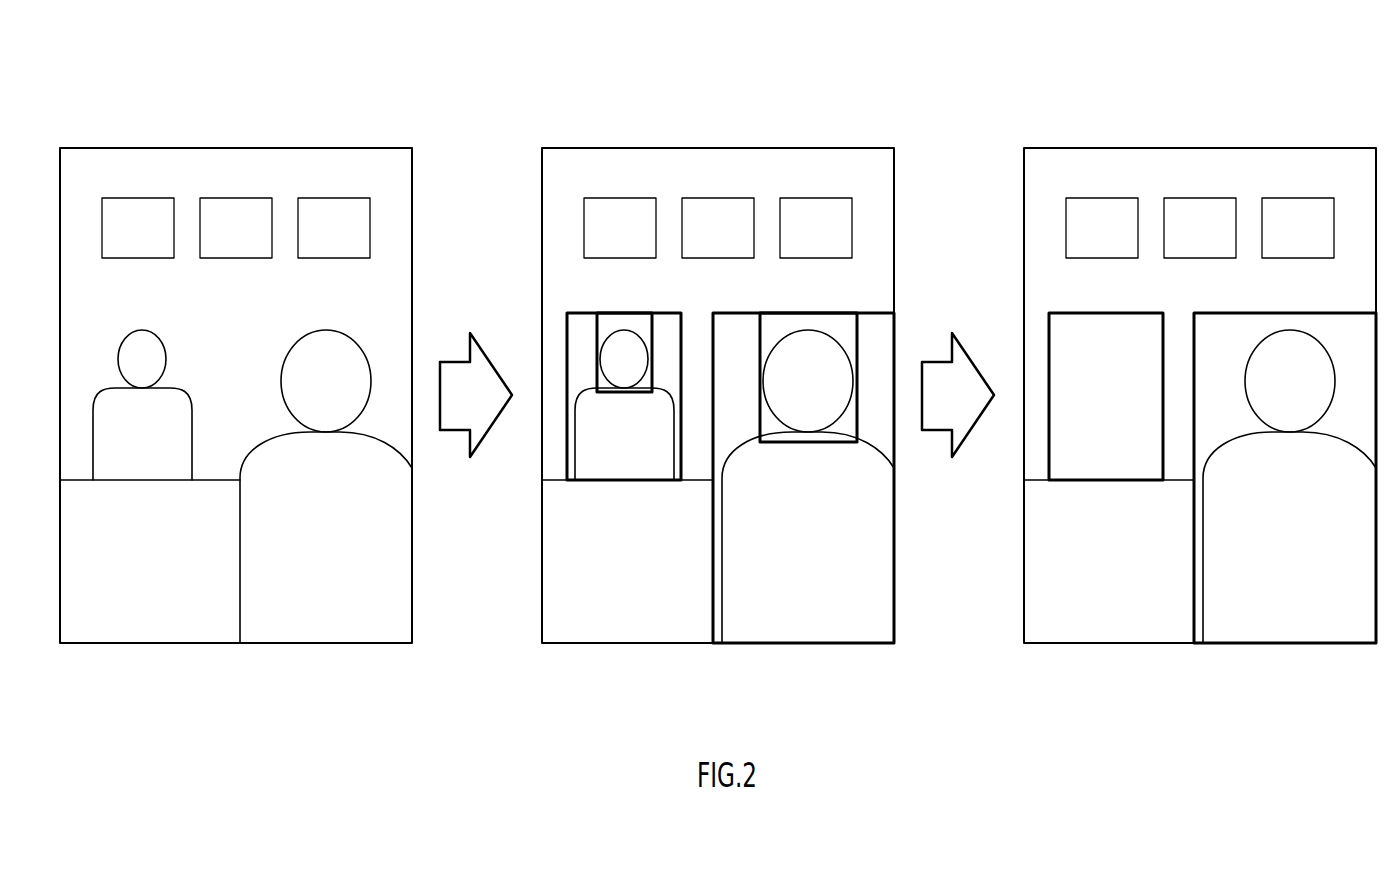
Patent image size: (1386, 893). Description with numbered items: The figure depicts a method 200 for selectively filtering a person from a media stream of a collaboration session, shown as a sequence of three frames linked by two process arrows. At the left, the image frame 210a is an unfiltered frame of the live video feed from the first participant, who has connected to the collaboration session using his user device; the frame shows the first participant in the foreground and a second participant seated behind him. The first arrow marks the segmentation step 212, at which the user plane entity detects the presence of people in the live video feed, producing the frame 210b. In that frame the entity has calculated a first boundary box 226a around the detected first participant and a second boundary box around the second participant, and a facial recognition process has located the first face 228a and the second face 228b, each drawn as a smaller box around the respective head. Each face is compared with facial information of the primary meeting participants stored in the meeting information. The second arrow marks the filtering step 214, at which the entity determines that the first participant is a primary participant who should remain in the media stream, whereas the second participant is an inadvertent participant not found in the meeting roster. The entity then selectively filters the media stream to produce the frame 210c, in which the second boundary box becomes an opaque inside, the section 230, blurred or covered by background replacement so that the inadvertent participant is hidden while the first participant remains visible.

The method 200 is at (280, 53).
The image frame 210a is at (366, 148).
The frame 210b is at (848, 148).
The frame 210c is at (1330, 148).
The segmentation step 212 is at (480, 443).
The filtering step 214 is at (962, 443).
The first boundary box 226a is at (712, 502).
The first face 228a is at (758, 325).
The second face 228b is at (595, 320).
The section 230 is at (1092, 410).